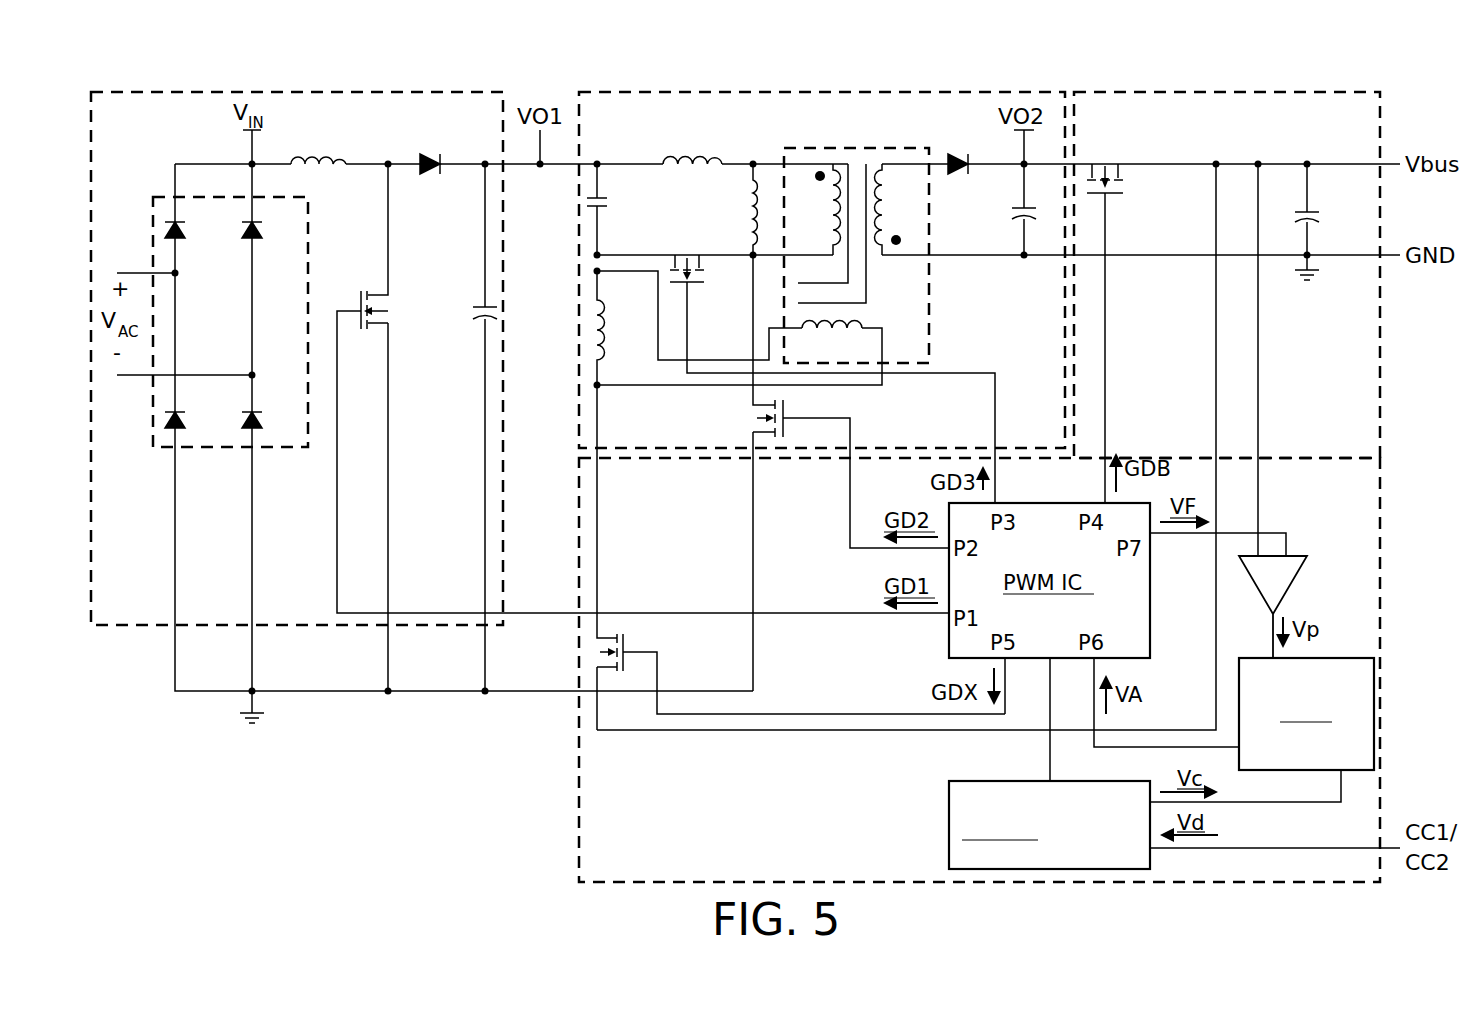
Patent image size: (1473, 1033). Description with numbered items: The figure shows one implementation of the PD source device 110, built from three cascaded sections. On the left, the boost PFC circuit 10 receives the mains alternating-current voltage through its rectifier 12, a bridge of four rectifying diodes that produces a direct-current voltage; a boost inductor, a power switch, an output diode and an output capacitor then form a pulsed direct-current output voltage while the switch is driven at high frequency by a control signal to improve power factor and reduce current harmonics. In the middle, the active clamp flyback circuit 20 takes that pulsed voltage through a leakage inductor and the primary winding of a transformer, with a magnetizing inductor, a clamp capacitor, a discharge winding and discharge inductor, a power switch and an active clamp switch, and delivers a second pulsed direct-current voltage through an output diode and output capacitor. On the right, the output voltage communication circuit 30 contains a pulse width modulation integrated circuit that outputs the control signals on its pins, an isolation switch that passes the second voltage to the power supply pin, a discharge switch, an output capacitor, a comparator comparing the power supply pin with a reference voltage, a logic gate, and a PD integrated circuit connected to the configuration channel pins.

The boost PFC circuit 10 is at (295, 92).
The rectifier 12 is at (283, 448).
The active clamp flyback circuit 20 is at (820, 92).
The output voltage communication circuit 30 is at (1195, 92).
The PD source device 110 is at (1358, 73).